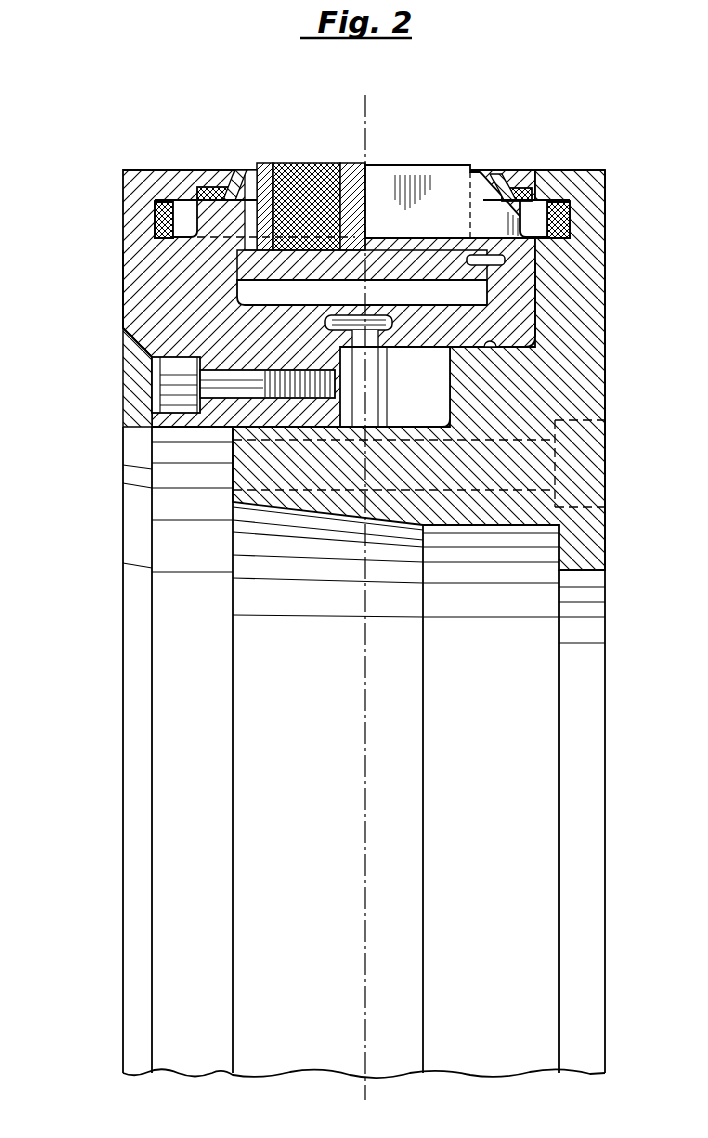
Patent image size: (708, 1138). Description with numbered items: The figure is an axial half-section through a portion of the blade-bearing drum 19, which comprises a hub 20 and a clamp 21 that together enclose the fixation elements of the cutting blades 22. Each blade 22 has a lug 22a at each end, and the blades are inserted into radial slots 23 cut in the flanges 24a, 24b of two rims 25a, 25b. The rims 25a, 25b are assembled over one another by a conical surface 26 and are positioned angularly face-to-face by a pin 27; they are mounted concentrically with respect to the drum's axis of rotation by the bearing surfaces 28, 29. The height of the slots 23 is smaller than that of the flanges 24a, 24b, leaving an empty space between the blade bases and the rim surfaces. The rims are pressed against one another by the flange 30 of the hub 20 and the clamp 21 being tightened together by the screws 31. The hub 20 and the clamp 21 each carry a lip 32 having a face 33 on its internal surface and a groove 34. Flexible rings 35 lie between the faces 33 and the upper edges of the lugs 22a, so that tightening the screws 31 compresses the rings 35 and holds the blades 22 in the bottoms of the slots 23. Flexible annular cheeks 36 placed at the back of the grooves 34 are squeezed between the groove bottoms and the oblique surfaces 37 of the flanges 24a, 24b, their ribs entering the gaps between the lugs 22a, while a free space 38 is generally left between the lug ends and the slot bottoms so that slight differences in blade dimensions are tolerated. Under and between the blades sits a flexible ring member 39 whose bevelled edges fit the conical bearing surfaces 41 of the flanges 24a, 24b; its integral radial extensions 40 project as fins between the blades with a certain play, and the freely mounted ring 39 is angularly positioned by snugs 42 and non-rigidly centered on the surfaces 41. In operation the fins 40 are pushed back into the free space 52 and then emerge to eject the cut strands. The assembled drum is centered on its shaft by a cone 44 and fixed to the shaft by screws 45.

The blade-bearing drum 19 is at (92, 566).
The hub 20 is at (616, 360).
The clamp 21 is at (114, 186).
The cutting blades 22 is at (384, 180).
The lug 22a is at (192, 214).
The radial slots 23 is at (502, 217).
The flange 24a is at (172, 293).
The flange 24b is at (550, 302).
The rim 25a is at (320, 430).
The rim 25b is at (395, 387).
The conical surface 26 is at (346, 312).
The pin 27 is at (360, 331).
The bearing surface 28 is at (148, 346).
The bearing surface 29 is at (490, 350).
The flange 30 is at (588, 320).
The screws 31 is at (165, 380).
The lip 32 is at (535, 212).
The face 33 is at (235, 195).
The groove 34 is at (234, 250).
The flexible rings 35 is at (212, 187).
The flexible cheeks 36 is at (168, 196).
The oblique surfaces 37 is at (198, 198).
The free space 38 is at (157, 221).
The flexible ring member 39 is at (343, 248).
The radial extensions 40 is at (297, 200).
The conical bearing surfaces 41 is at (226, 271).
The snugs 42 is at (479, 250).
The cone 44 is at (276, 540).
The screws 45 is at (590, 450).
The free space 52 is at (264, 232).